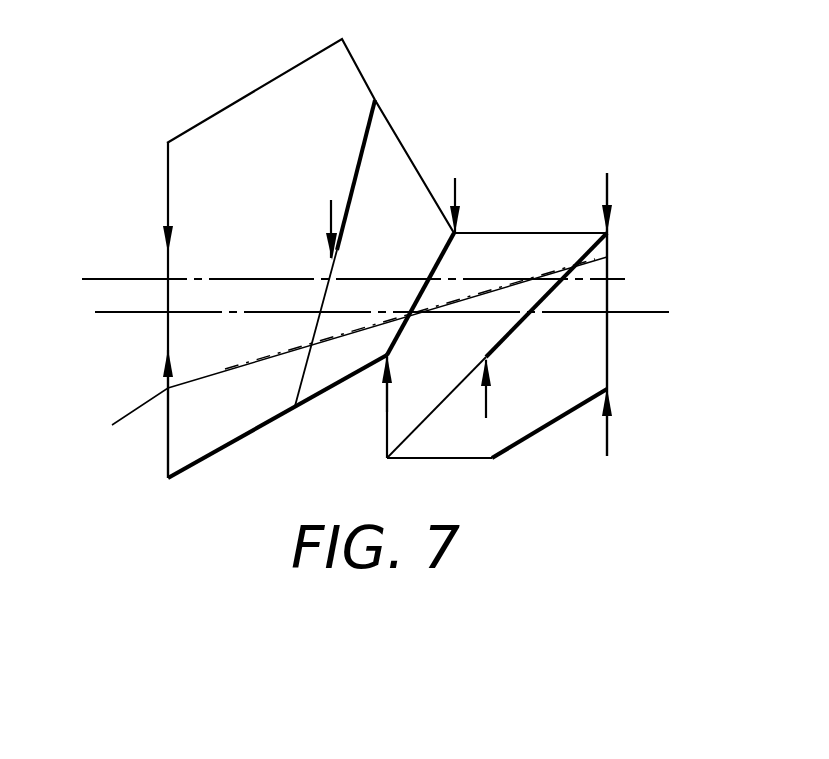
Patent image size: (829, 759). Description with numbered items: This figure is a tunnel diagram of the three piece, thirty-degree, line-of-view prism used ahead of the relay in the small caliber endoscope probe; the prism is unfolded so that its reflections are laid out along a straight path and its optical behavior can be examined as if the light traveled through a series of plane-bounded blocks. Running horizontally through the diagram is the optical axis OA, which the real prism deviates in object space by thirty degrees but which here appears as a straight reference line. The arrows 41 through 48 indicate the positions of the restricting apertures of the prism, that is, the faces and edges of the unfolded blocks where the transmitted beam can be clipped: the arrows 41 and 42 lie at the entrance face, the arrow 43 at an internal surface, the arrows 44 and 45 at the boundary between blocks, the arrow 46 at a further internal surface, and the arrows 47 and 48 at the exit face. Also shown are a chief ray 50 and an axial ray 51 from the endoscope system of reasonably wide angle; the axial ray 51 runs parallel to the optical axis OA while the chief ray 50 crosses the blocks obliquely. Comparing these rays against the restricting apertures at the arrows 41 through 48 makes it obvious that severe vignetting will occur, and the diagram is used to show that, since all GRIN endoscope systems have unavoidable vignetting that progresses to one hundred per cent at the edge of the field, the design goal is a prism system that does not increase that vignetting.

The restricting aperture arrow 41 is at (168, 197).
The restricting aperture arrow 42 is at (170, 438).
The restricting aperture arrow 43 is at (327, 218).
The restricting aperture arrow 44 is at (384, 415).
The restricting aperture arrow 45 is at (457, 191).
The restricting aperture arrow 46 is at (488, 400).
The restricting aperture arrow 47 is at (609, 196).
The restricting aperture arrow 48 is at (609, 436).
The chief ray 50 is at (160, 393).
The axial ray 51 is at (135, 278).
The optical axis OA is at (403, 314).